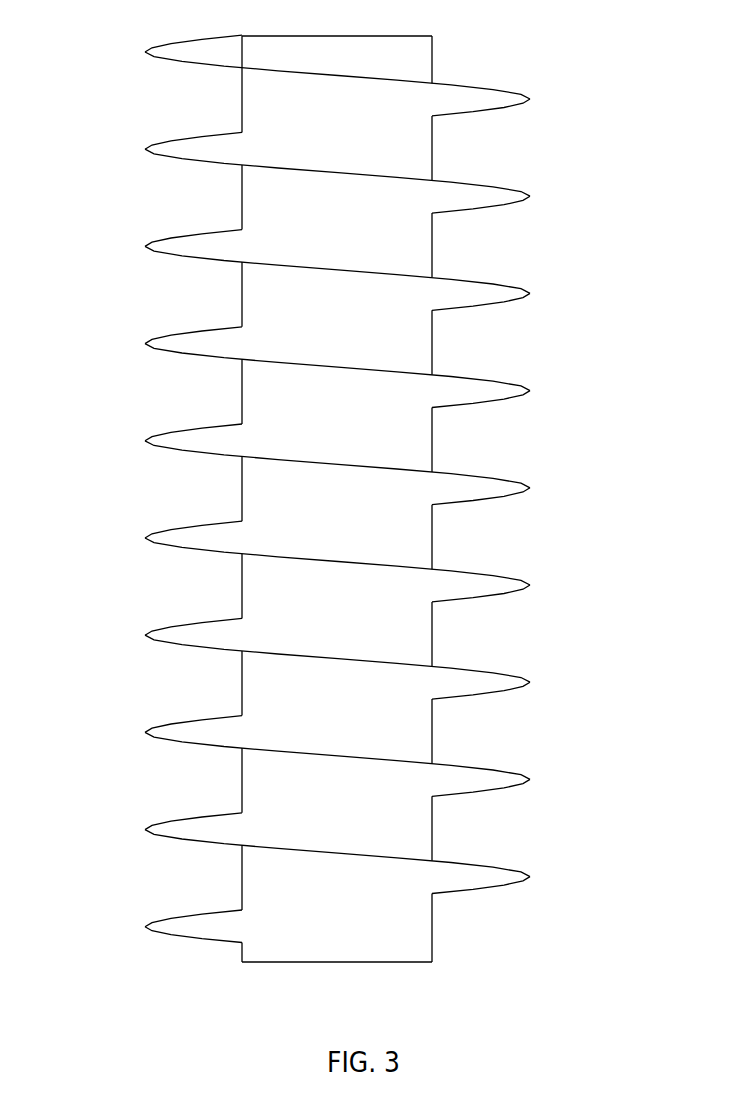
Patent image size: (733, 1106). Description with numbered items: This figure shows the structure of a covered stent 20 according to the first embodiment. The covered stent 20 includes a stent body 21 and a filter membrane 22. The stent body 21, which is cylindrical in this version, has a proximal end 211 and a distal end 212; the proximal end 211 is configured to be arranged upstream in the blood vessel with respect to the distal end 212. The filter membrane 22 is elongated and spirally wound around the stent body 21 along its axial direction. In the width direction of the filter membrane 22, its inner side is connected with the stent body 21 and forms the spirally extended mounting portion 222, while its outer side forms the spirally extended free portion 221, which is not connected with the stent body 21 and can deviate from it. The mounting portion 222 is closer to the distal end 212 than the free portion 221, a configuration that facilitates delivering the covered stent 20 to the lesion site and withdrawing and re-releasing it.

The covered stent 20 is at (578, 457).
The stent body 21 is at (370, 427).
The proximal end 211 is at (432, 962).
The distal end 212 is at (432, 37).
The filter membrane 22 is at (223, 357).
The free portion 221 is at (460, 300).
The mounting portion 222 is at (435, 215).